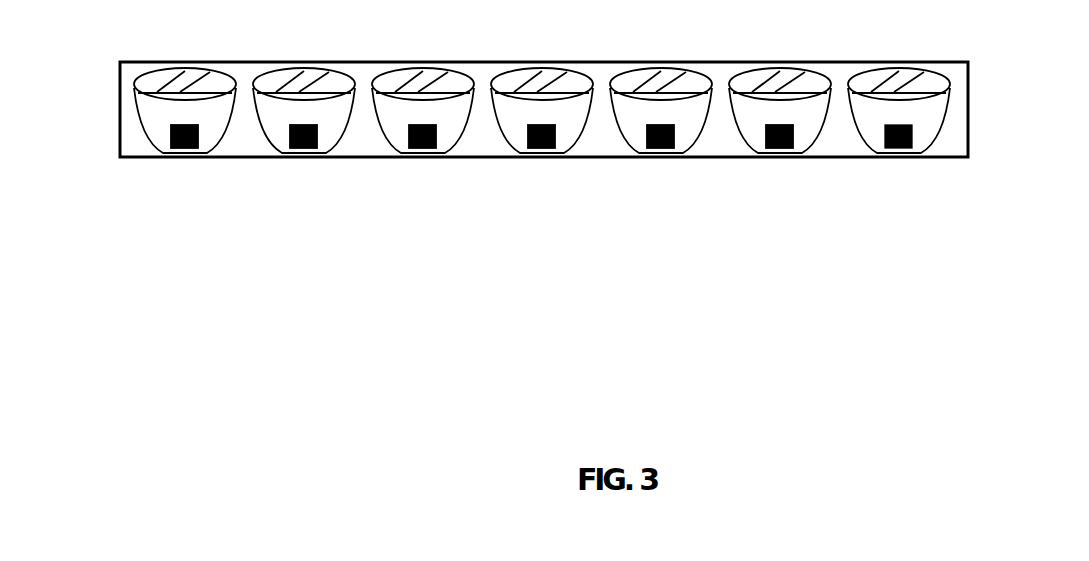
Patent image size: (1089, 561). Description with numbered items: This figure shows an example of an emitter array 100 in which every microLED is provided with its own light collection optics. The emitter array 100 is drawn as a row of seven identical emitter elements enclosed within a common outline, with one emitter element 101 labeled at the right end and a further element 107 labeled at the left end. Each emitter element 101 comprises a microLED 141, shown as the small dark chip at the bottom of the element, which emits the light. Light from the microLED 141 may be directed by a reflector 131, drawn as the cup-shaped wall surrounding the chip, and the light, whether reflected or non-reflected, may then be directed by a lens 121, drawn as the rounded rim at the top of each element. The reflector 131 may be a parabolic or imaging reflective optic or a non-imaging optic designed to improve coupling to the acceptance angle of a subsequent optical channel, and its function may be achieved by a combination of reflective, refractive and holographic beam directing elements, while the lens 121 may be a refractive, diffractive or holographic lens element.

The emitter array 100 is at (597, 157).
The emitter element 101 is at (963, 142).
The light emitting unit 107 is at (158, 130).
The lens 121 is at (952, 87).
The reflector 131 is at (940, 130).
The microLED 141 is at (912, 137).